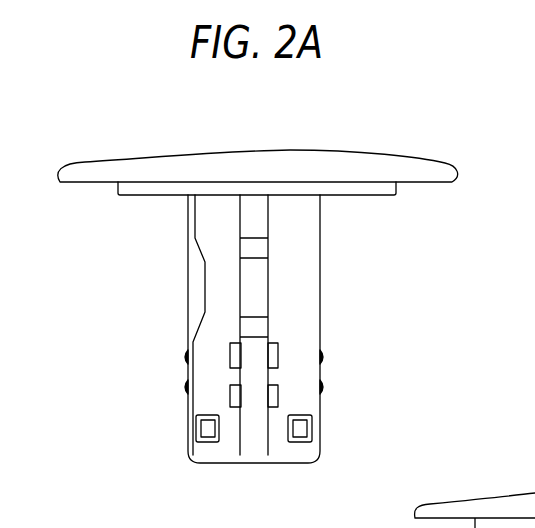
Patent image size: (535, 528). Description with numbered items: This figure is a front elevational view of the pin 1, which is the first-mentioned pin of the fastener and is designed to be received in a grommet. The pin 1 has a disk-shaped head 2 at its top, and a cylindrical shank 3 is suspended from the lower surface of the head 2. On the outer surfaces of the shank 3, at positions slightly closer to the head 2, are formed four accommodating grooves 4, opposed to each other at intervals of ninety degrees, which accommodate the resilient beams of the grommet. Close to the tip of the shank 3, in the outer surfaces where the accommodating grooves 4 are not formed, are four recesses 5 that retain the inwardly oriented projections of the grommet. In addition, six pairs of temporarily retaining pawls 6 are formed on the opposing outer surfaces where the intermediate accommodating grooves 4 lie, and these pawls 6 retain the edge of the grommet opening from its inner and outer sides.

The pin 1 is at (421, 147).
The head 2 is at (174, 162).
The shank 3 is at (312, 226).
The accommodating grooves 4 is at (205, 280).
The recesses 5 is at (212, 435).
The temporarily retaining pawls 6 is at (230, 393).